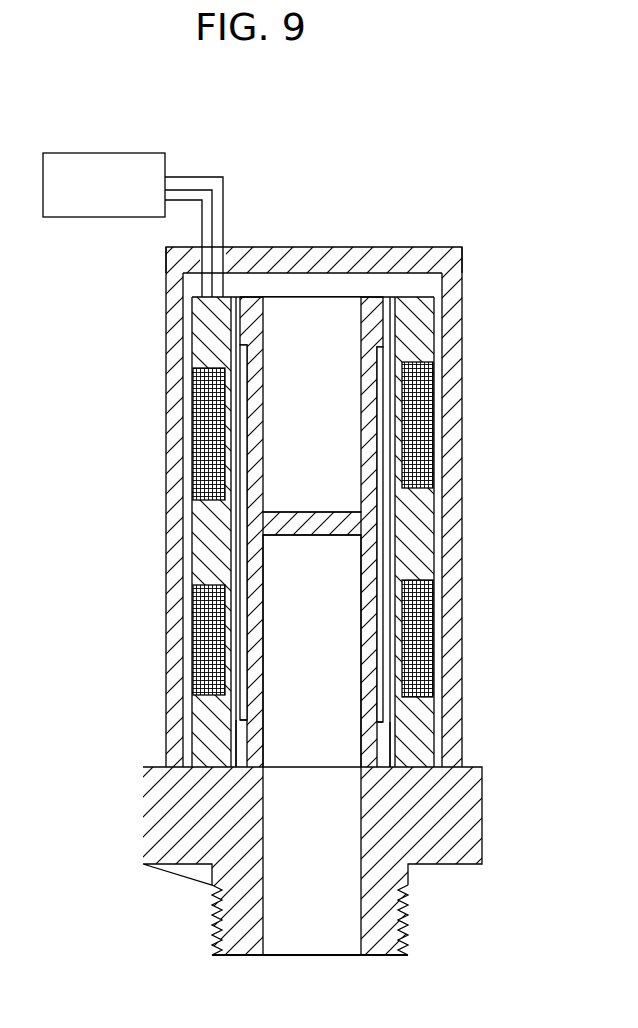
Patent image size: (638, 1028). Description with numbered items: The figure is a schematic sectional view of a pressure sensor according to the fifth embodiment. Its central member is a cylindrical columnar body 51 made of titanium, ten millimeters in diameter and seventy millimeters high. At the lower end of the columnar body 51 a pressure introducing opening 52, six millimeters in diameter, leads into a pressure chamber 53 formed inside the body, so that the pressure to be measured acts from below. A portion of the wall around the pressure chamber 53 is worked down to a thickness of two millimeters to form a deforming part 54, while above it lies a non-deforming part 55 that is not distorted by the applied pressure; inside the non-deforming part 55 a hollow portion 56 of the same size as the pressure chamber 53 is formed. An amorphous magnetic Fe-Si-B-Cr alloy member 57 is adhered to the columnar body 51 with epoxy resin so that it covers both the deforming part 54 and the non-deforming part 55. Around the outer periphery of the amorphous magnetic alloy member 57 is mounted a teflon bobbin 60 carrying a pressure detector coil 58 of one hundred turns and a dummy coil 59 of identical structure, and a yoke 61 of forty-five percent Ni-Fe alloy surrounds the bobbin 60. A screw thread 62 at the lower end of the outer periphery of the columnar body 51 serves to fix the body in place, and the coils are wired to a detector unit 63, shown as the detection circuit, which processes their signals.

The columnar body 51 is at (468, 815).
The pressure introducing opening 52 is at (320, 957).
The pressure chamber 53 is at (283, 732).
The deforming part 54 is at (367, 700).
The non-deforming part 55 is at (372, 368).
The hollow portion 56 is at (300, 310).
The amorphous magnetic alloy member 57 is at (380, 522).
The pressure detector coil 58 is at (432, 648).
The dummy coil 59 is at (432, 443).
The bobbin 60 is at (425, 325).
The yoke 61 is at (405, 262).
The screw thread 62 is at (405, 908).
The detector unit 63 is at (137, 153).